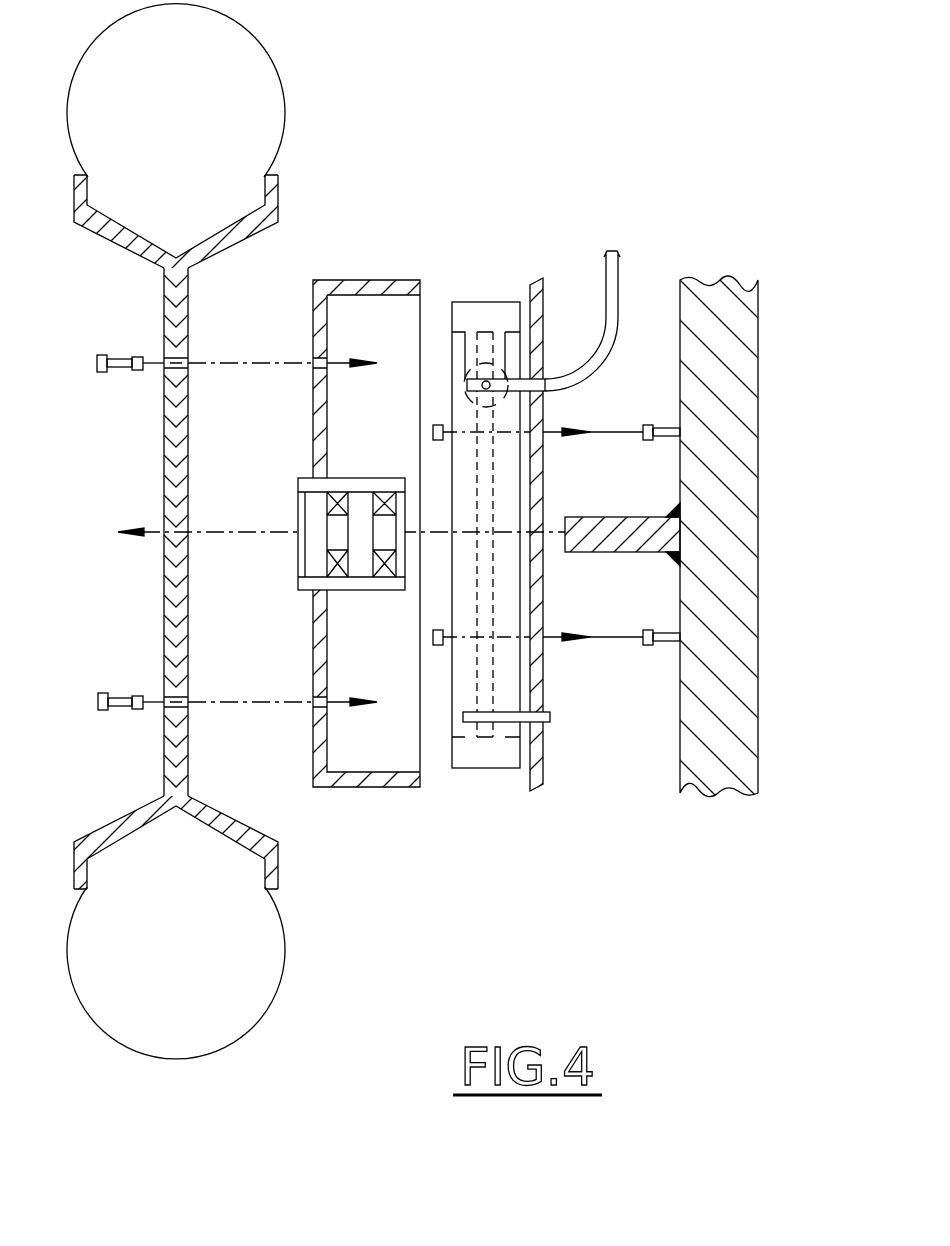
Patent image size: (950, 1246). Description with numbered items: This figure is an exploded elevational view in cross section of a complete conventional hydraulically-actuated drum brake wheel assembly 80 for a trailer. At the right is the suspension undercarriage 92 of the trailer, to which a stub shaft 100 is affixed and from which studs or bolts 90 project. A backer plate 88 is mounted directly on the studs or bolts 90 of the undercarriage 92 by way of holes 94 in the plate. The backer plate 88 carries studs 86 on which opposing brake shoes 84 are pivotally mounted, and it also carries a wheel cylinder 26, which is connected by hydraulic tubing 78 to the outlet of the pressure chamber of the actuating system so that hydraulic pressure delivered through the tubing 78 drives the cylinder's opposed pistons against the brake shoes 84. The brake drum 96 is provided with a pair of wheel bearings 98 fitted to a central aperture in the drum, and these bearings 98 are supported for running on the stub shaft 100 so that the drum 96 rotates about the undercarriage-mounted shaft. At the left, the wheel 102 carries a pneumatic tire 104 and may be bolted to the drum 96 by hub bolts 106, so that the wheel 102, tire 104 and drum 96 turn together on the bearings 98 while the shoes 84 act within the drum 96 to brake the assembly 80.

The wheel braking assembly 80 is at (586, 188).
The pneumatic tire 104 is at (197, 120).
The wheel 102 is at (190, 324).
The hub bolts 106 is at (123, 367).
The brake drum 96 is at (352, 279).
The wheel bearings 98 is at (392, 491).
The wheel cylinder 26 is at (483, 380).
The backer plate 88 is at (528, 280).
The brake shoes 84 is at (483, 768).
The studs 86 is at (505, 725).
The holes 94 is at (546, 437).
The studs or bolts 90 is at (658, 425).
The suspension undercarriage 92 is at (727, 384).
The stub shaft 100 is at (640, 535).
The hydraulic tubing 78 is at (622, 286).